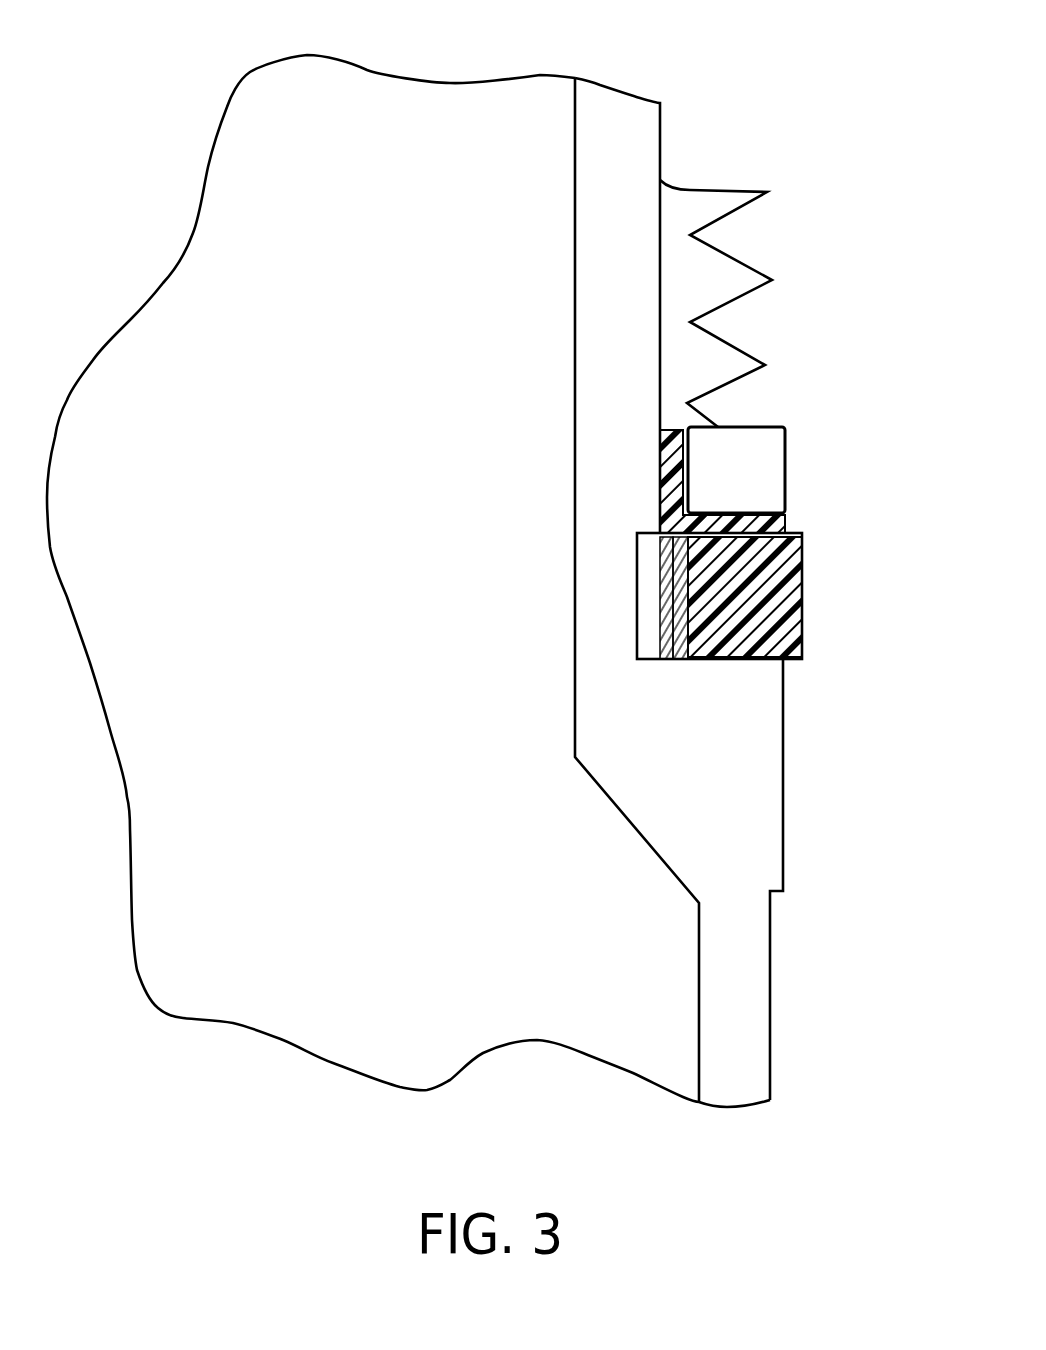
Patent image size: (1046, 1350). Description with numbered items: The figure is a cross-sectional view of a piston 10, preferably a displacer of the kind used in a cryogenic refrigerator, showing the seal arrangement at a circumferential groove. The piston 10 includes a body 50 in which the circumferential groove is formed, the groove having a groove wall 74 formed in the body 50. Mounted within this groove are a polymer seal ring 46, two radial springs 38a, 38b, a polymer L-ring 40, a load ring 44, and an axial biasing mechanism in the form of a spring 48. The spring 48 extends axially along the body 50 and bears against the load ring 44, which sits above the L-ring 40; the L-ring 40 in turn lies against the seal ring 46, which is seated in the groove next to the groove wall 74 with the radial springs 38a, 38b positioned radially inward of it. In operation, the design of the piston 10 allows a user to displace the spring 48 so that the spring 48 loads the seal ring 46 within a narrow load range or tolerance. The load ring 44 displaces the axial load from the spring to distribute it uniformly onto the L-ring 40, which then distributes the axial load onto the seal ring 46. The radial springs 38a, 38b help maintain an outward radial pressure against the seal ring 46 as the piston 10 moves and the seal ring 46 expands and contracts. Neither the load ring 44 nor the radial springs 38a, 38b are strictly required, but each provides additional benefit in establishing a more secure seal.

The piston 10 is at (737, 60).
The radial spring 38a is at (660, 593).
The radial spring 38b is at (667, 660).
The polymer L-ring 40 is at (785, 528).
The load ring 44 is at (785, 477).
The polymer seal ring 46 is at (803, 623).
The spring 48 is at (750, 267).
The body 50 is at (783, 764).
The groove wall 74 is at (783, 657).